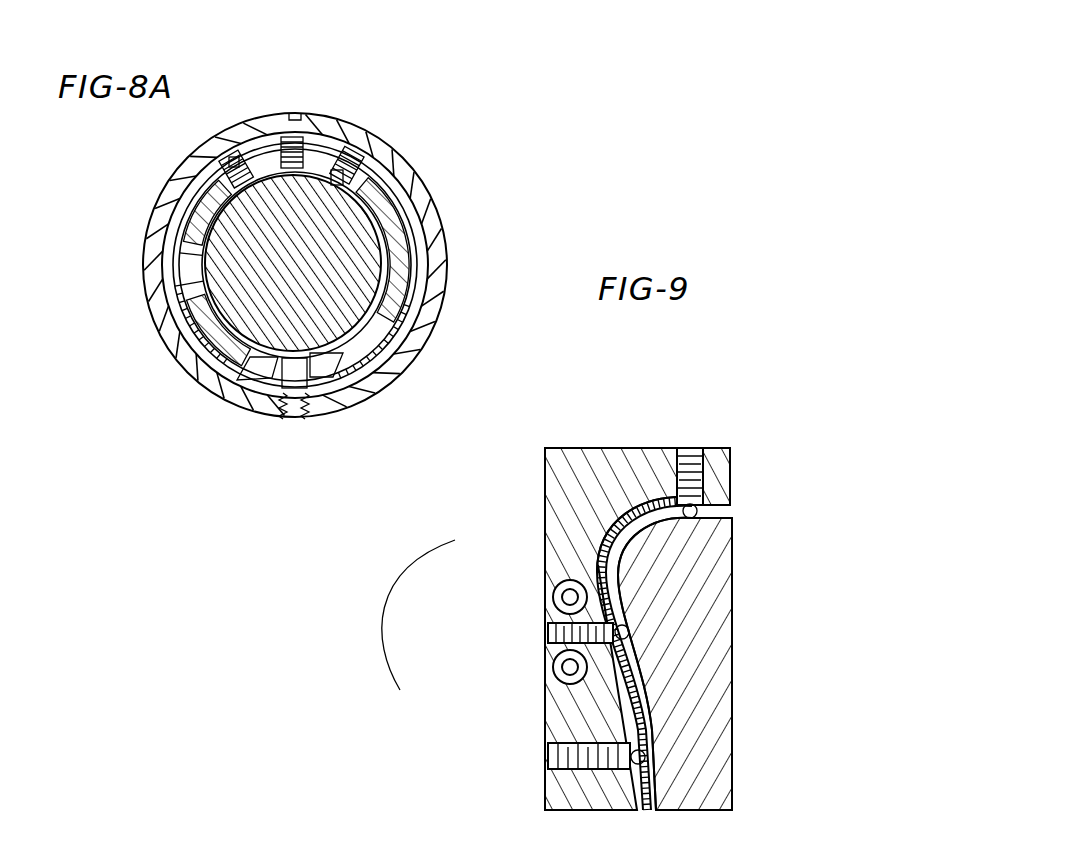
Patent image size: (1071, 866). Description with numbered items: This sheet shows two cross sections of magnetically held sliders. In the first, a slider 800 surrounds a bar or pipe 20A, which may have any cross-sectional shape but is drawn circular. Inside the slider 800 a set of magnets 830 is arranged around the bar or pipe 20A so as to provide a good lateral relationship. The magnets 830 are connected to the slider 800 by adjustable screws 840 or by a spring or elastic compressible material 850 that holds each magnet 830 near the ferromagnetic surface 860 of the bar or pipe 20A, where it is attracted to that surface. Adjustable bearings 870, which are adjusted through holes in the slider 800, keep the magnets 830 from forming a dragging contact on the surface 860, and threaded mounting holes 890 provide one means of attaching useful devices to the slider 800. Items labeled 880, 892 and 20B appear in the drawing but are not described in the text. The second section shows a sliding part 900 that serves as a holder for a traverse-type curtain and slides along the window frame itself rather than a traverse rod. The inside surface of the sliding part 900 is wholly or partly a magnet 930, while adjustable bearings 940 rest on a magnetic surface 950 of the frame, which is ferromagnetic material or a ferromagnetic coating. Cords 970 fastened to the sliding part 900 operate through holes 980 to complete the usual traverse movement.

In FIG. 8A, the slider 800 is at (340, 120).
In FIG. 8A, the bar or pipe 20A is at (363, 255).
In FIG. 8A, the magnets 830 is at (335, 155).
In FIG. 8A, the spring or elastic compressible material 850 is at (190, 330).
In FIG. 8A, the threaded plug 880 is at (230, 137).
In FIG. 8A, the adjustable bearings 870 is at (213, 133).
In FIG. 8A, the adjustable screws 840 is at (297, 112).
In FIG. 8A, the ferromagnetic surface 860 is at (210, 385).
In FIG. 8A, the threaded mounting holes 890 is at (299, 417).
In FIG. 8A, the spoke gap 892 is at (192, 247).
In FIG. 9, the sliding part 900 is at (600, 446).
In FIG. 9, the shaft 20B is at (735, 640).
In FIG. 9, the magnet 930 is at (592, 545).
In FIG. 9, the magnetic surface 950 is at (640, 606).
In FIG. 9, the adjustable bearings 940 is at (692, 447).
In FIG. 9, the cords 970 is at (560, 590).
In FIG. 9, the holes 980 is at (418, 627).